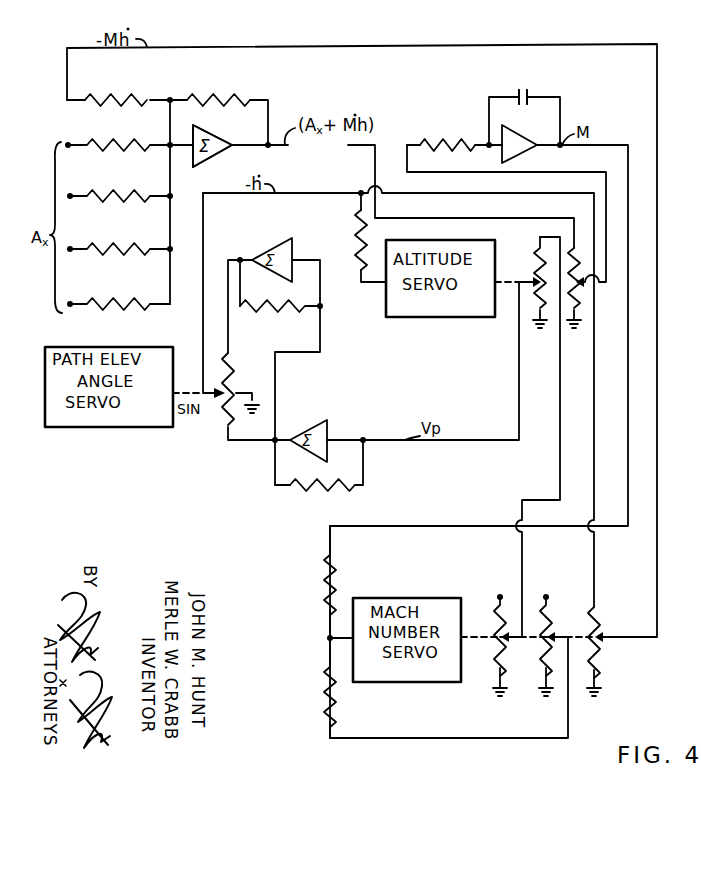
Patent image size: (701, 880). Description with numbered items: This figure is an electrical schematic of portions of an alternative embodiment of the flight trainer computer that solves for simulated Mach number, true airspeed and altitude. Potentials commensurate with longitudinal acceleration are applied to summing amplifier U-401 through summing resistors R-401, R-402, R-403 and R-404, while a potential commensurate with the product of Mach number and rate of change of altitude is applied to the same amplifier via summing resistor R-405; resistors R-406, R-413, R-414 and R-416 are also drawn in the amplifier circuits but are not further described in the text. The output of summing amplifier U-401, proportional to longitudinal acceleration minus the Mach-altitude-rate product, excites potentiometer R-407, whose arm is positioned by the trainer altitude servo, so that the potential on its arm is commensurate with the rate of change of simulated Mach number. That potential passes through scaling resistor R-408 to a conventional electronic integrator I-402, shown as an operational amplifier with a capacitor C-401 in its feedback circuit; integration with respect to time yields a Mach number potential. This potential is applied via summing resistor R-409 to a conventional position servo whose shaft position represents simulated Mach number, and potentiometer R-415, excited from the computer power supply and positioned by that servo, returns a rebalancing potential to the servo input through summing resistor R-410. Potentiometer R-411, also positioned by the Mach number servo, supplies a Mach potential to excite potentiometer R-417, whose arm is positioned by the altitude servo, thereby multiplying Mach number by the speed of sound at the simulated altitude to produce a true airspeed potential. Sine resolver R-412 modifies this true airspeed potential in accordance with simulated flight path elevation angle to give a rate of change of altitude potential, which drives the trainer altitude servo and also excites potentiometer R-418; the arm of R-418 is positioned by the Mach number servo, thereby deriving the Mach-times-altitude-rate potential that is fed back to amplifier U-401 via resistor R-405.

The summing resistor R-401 is at (141, 124).
The summing resistor R-402 is at (145, 178).
The summing resistor R-403 is at (145, 231).
The summing resistor R-404 is at (145, 286).
The summing resistor R-405 is at (146, 95).
The feedback resistor R-406 is at (268, 92).
The potentiometer R-407 is at (572, 300).
The scaling resistor R-408 is at (436, 140).
The summing resistor R-409 is at (328, 578).
The summing resistor R-410 is at (328, 705).
The potentiometer R-411 is at (495, 620).
The sine resolver R-412 is at (226, 415).
The feedback resistor R-413 is at (297, 489).
The resistor R-414 is at (356, 240).
The potentiometer R-415 is at (540, 615).
The feedback resistor R-416 is at (250, 310).
The potentiometer R-417 is at (535, 300).
The potentiometer R-418 is at (600, 642).
The summing amplifier U-401 is at (212, 160).
The capacitor C-401 is at (523, 94).
The electronic integrator I-402 is at (562, 126).